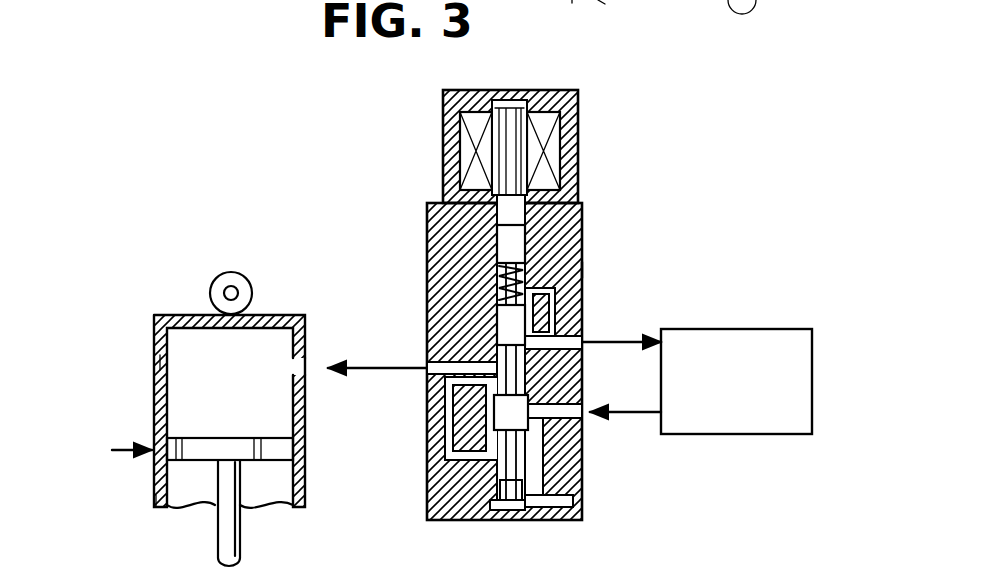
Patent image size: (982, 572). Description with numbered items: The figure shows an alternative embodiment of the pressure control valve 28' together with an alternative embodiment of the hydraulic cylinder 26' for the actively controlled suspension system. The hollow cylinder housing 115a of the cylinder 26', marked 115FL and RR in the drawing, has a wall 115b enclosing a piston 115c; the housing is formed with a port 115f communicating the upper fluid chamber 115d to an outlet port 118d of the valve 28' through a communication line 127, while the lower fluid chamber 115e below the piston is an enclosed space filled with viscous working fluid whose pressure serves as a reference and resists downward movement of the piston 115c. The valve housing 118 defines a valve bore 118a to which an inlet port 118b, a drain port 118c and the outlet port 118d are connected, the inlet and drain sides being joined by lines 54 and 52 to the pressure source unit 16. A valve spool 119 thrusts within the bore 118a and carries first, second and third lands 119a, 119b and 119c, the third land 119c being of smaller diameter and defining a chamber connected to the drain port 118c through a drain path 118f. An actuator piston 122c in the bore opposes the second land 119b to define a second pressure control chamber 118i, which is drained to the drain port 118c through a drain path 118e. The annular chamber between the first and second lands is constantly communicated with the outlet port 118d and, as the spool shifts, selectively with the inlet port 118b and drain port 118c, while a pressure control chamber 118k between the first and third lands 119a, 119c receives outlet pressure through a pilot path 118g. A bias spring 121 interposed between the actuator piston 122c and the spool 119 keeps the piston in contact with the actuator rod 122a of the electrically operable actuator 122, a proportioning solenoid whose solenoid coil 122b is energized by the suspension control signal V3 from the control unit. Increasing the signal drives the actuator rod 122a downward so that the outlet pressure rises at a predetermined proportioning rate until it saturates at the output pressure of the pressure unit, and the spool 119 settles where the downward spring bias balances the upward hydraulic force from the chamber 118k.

The pressure source unit 16 is at (812, 380).
The hydraulic cylinder 26' is at (116, 450).
The pressure control valve 28' is at (687, 117).
The return line 52 is at (650, 412).
The supply line 54 is at (640, 342).
The hollow cylinder housing 115a is at (158, 400).
The cylinder wall 115b is at (160, 362).
The piston 115c is at (302, 449).
The upper fluid chamber 115d is at (242, 536).
The lower fluid chamber 115e is at (160, 500).
The port 115f is at (309, 342).
The front-left wheel cylinder roller 115FL is at (262, 316).
The rear-right RR is at (320, 253).
The valve housing 118 is at (433, 522).
The valve bore 118a is at (498, 239).
The inlet port 118b is at (582, 425).
The drain port 118c is at (582, 301).
The outlet port 118d is at (445, 367).
The drain path 118e is at (582, 271).
The drain path 118f is at (546, 522).
The pilot path 118g is at (448, 471).
The second pressure control chamber 118i is at (582, 327).
The pressure control chamber 118k is at (492, 522).
The valve spool 119 is at (497, 433).
The first land 119a is at (496, 405).
The second land 119b is at (497, 313).
The third land 119c is at (470, 522).
The spring 121 is at (500, 285).
The electrically operable actuator 122 is at (578, 127).
The actuator rod 122a is at (578, 193).
The solenoid coil 122b is at (540, 90).
The actuator piston 122c is at (443, 218).
The communication line 127 is at (338, 374).
The valve signal V3 is at (437, 128).